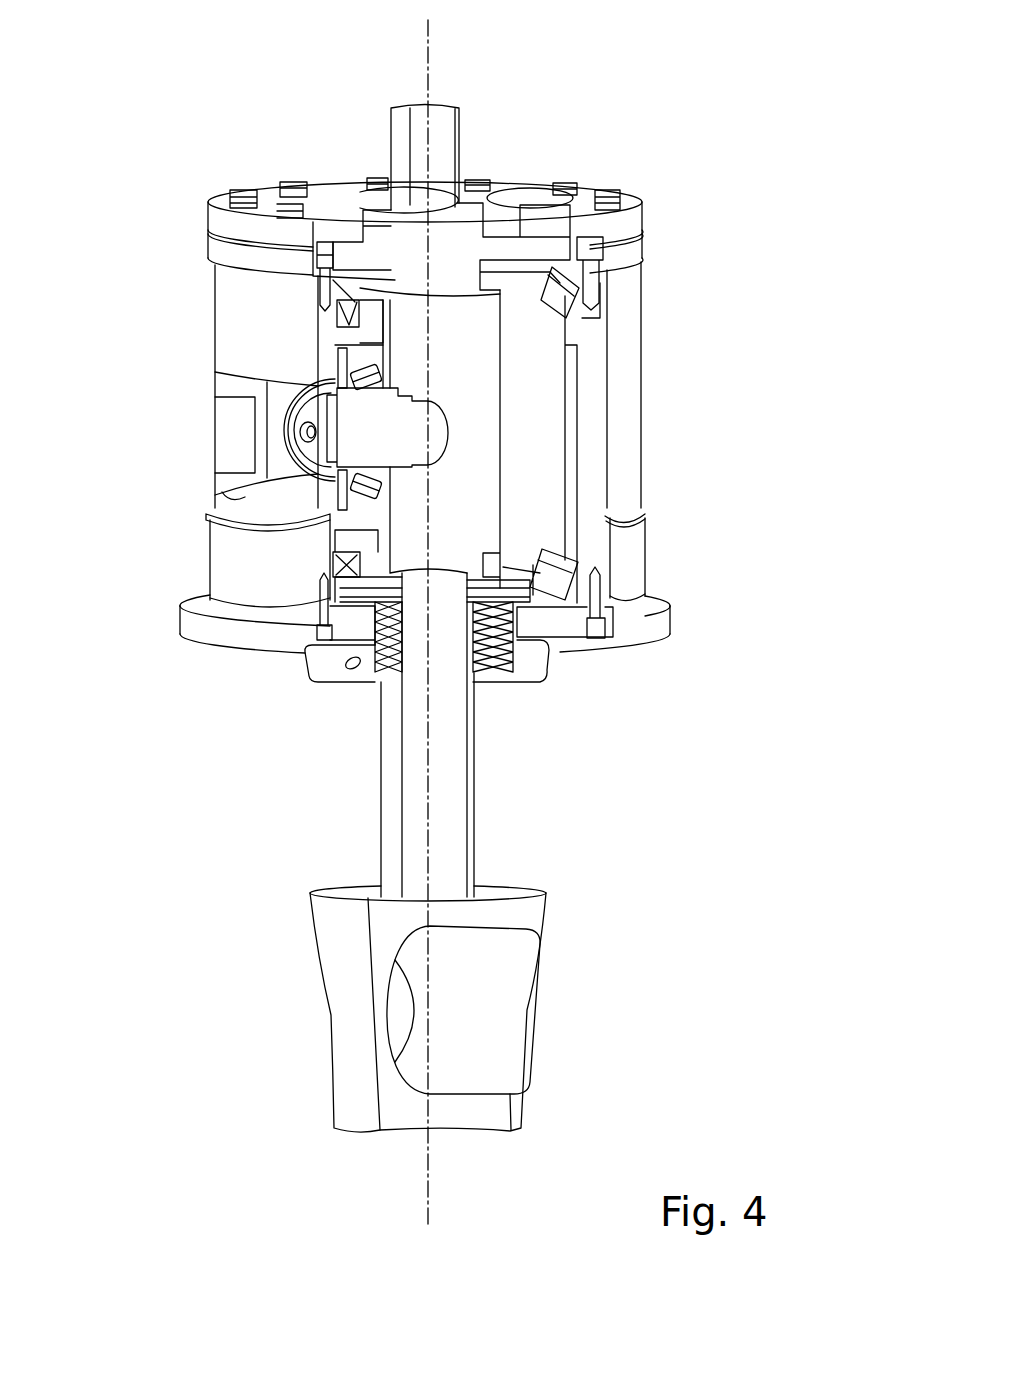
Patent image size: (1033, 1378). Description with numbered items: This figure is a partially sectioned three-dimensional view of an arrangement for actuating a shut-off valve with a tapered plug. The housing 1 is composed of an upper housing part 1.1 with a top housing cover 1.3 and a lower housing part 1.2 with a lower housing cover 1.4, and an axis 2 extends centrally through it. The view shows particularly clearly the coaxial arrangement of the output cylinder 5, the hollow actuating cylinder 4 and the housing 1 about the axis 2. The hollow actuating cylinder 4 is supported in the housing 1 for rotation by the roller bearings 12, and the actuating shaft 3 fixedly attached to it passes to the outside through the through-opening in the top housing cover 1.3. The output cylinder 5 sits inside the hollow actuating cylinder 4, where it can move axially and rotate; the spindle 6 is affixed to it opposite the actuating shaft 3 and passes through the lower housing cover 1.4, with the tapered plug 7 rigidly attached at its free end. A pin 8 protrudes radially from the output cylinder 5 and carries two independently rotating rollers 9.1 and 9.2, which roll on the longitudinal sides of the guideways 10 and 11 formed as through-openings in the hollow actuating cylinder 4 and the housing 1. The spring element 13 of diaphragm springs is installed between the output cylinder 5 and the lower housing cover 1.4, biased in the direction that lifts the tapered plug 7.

The housing 1 is at (677, 297).
The upper housing part 1.1 is at (620, 340).
The lower housing part 1.2 is at (620, 502).
The top housing cover 1.3 is at (563, 250).
The lower housing cover 1.4 is at (562, 625).
The axis 2 is at (425, 75).
The actuating shaft 3 is at (446, 153).
The hollow actuating cylinder 4 is at (535, 390).
The output cylinder 5 is at (477, 450).
The spindle 6 is at (448, 797).
The tapered plug 7 is at (507, 915).
The pin 8 is at (290, 428).
The rotating roller 9.1 is at (343, 425).
The rotating roller 9.2 is at (358, 358).
The guideway 10 is at (350, 343).
The guideway 11 is at (265, 380).
The roller bearing 12 is at (557, 292).
The spring element 13 is at (490, 650).